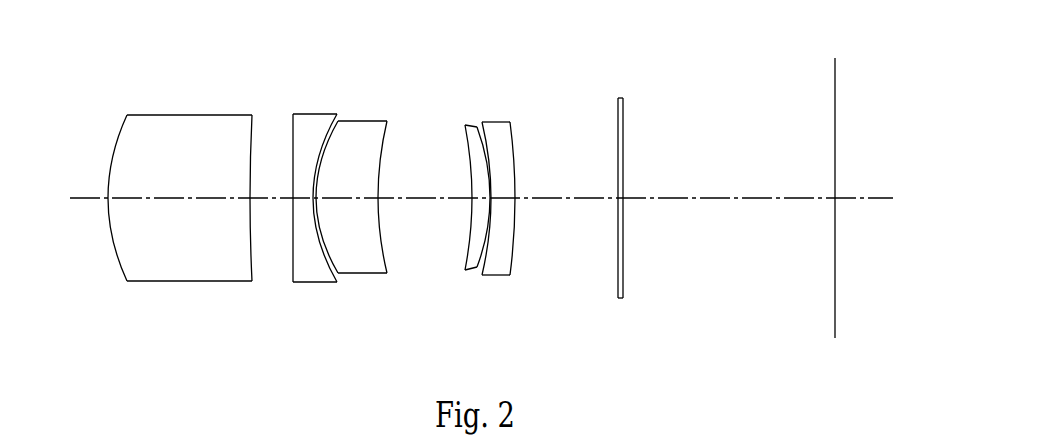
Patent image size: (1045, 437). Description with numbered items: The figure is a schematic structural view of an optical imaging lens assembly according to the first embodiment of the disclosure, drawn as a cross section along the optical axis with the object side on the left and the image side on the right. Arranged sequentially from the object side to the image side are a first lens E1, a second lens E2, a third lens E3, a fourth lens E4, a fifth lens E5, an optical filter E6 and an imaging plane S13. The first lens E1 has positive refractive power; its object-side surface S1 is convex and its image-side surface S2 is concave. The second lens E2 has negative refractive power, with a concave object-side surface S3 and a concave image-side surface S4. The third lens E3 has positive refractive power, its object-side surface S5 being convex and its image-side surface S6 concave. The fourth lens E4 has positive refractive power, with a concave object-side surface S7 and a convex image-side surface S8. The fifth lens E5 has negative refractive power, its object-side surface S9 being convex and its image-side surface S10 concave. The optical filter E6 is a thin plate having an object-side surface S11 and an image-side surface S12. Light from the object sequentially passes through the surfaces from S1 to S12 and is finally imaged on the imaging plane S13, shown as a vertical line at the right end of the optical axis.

The first lens E1 is at (144, 188).
The second lens E2 is at (284, 188).
The third lens E3 is at (344, 188).
The fourth lens E4 is at (461, 188).
The fifth lens E5 is at (512, 188).
The optical filter E6 is at (645, 188).
The object-side surface of the first lens S1 is at (108, 198).
The image-side surface of the first lens S2 is at (250, 198).
The object-side surface of the second lens S3 is at (293, 198).
The image-side surface of the second lens S4 is at (313, 198).
The object-side surface of the third lens S5 is at (316, 198).
The image-side surface of the third lens S6 is at (378, 198).
The object-side surface of the fourth lens S7 is at (472, 198).
The image-side surface of the fourth lens S8 is at (490, 198).
The object-side surface of the fifth lens S9 is at (491, 198).
The image-side surface of the fifth lens S10 is at (515, 198).
The object-side surface of the optical filter S11 is at (619, 198).
The image-side surface of the optical filter S12 is at (623, 198).
The imaging plane S13 is at (835, 198).